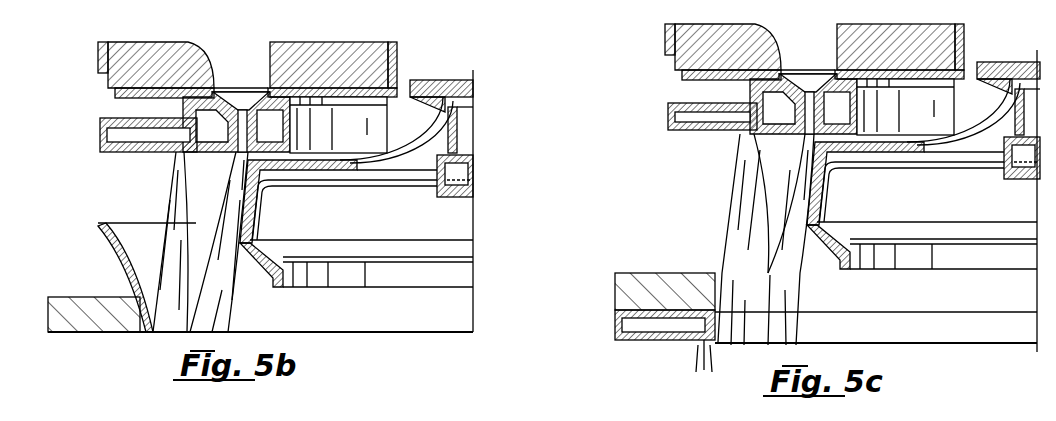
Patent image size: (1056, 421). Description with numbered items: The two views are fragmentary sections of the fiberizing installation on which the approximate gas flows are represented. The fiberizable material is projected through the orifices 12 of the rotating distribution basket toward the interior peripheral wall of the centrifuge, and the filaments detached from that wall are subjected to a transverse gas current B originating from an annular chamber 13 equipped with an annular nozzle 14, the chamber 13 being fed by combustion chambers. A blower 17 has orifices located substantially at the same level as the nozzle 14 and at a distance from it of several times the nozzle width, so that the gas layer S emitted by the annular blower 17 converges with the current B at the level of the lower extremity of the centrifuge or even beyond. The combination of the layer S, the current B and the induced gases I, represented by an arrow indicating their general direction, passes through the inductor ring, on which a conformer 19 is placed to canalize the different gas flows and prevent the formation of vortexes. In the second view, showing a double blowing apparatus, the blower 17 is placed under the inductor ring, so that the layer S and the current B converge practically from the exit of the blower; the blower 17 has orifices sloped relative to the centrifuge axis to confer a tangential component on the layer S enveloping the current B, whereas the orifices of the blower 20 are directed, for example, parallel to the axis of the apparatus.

In FIG. 5B, the orifices 12 is at (436, 177).
In FIG. 5C, the orifices 12 is at (1004, 164).
In FIG. 5B, the annular chamber 13 is at (243, 100).
In FIG. 5C, the annular chamber 13 is at (808, 84).
In FIG. 5B, the annular nozzle 14 is at (232, 113).
In FIG. 5C, the annular nozzle 14 is at (765, 101).
In FIG. 5B, the blower 17 is at (100, 135).
In FIG. 5C, the blower 17 is at (624, 341).
In FIG. 5B, the conformer 19 is at (110, 247).
In FIG. 5C, the blower 20 is at (668, 120).
In FIG. 5B, the gas current B is at (228, 172).
In FIG. 5C, the gas current B is at (797, 150).
In FIG. 5B, the gas layer S is at (170, 205).
In FIG. 5C, the gas layer S is at (697, 366).
In FIG. 5B, the induced gases I is at (117, 220).